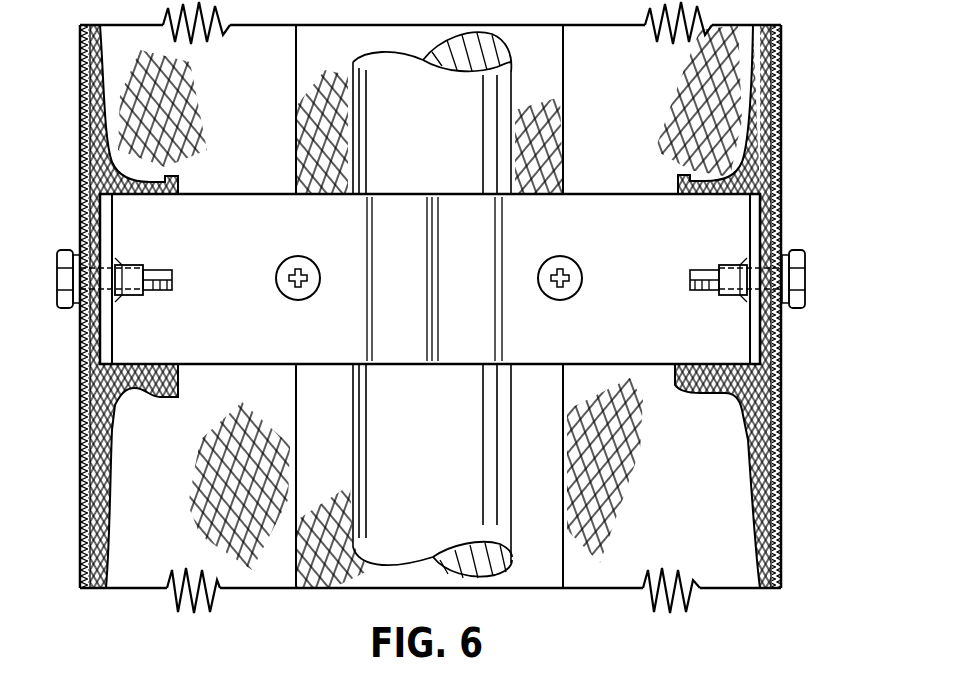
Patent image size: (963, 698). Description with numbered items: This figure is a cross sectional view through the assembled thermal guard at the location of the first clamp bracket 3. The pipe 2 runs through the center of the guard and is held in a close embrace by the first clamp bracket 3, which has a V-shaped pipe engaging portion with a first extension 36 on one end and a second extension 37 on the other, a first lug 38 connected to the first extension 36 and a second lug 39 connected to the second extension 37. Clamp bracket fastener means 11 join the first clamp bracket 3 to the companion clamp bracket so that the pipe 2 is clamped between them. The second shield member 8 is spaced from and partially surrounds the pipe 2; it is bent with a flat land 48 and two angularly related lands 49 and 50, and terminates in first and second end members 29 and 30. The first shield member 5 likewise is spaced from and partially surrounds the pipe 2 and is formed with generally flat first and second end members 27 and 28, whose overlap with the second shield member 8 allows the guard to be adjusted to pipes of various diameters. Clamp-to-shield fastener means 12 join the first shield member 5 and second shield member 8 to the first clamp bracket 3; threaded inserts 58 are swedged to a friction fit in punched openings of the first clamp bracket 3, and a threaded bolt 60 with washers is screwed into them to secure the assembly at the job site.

The pipe 2 is at (516, 466).
The first clamp bracket 3 is at (592, 179).
The first shield member 5 is at (784, 462).
The second shield member 8 is at (598, 600).
The clamp bracket fastener means 11 is at (302, 244).
The clamp-to-shield fastener means 12 is at (431, 273).
The first end member 27 is at (782, 172).
The second end member 28 is at (80, 178).
The first end member 29 is at (677, 185).
The second end member 30 is at (183, 178).
The first extension 36 is at (650, 352).
The second extension 37 is at (228, 352).
The first lug 38 is at (738, 400).
The second lug 39 is at (108, 352).
The flat land 48 is at (340, 61).
The angularly related land 49 is at (275, 75).
The angularly related land 50 is at (625, 67).
The threaded inserts 58 is at (431, 280).
The threaded bolt 60 is at (165, 290).